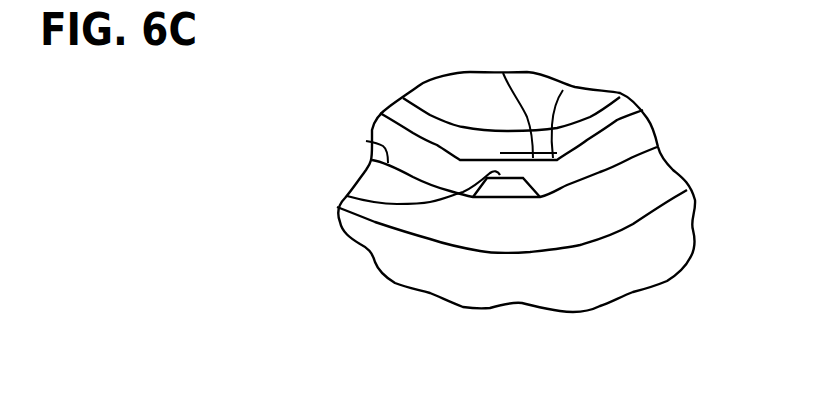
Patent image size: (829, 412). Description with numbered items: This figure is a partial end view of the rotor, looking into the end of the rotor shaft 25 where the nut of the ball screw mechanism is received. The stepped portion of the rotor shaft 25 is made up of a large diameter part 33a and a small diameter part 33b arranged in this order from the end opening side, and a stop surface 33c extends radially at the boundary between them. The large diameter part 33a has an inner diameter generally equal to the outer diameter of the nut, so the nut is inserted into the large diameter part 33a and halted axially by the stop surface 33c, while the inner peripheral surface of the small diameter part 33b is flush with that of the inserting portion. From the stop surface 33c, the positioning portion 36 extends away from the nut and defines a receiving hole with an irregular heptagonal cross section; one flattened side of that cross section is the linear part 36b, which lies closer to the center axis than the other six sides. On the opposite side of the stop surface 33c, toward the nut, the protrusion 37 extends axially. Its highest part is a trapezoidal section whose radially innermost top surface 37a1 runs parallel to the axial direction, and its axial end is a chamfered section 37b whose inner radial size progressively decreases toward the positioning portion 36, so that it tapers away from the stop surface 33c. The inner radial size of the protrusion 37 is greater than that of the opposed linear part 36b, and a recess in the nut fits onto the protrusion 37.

The rotor shaft 25 is at (590, 246).
The large diameter part 33a is at (366, 141).
The small diameter part 33b is at (563, 90).
The stop surface 33c is at (640, 141).
The positioning portion 36 is at (502, 152).
The linear part 36b is at (503, 73).
The protrusion 37 is at (545, 185).
The top surface 37a1 is at (347, 196).
The chamfered section 37b is at (507, 186).